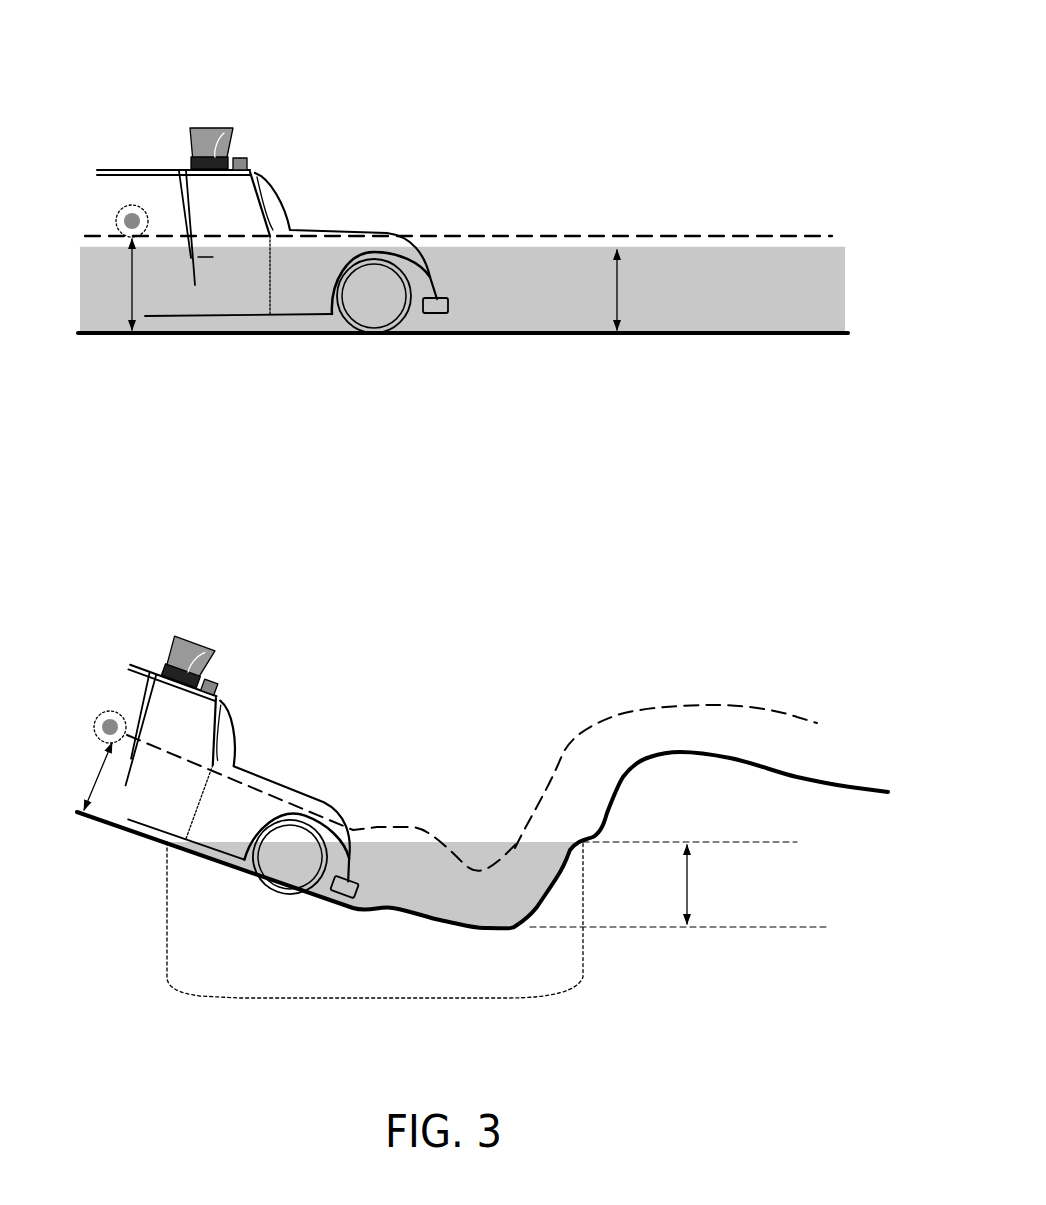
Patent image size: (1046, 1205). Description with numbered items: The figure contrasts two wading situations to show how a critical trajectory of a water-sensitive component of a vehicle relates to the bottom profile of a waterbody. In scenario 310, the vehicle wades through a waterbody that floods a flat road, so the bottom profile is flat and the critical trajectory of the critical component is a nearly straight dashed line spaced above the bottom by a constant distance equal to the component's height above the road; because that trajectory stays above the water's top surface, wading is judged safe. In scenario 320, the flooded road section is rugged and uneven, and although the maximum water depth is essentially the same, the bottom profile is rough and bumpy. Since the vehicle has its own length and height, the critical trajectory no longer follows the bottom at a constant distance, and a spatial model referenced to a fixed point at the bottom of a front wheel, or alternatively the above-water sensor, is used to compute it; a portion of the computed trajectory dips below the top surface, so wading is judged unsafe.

The scenario 310 is at (130, 57).
The scenario 320 is at (132, 550).